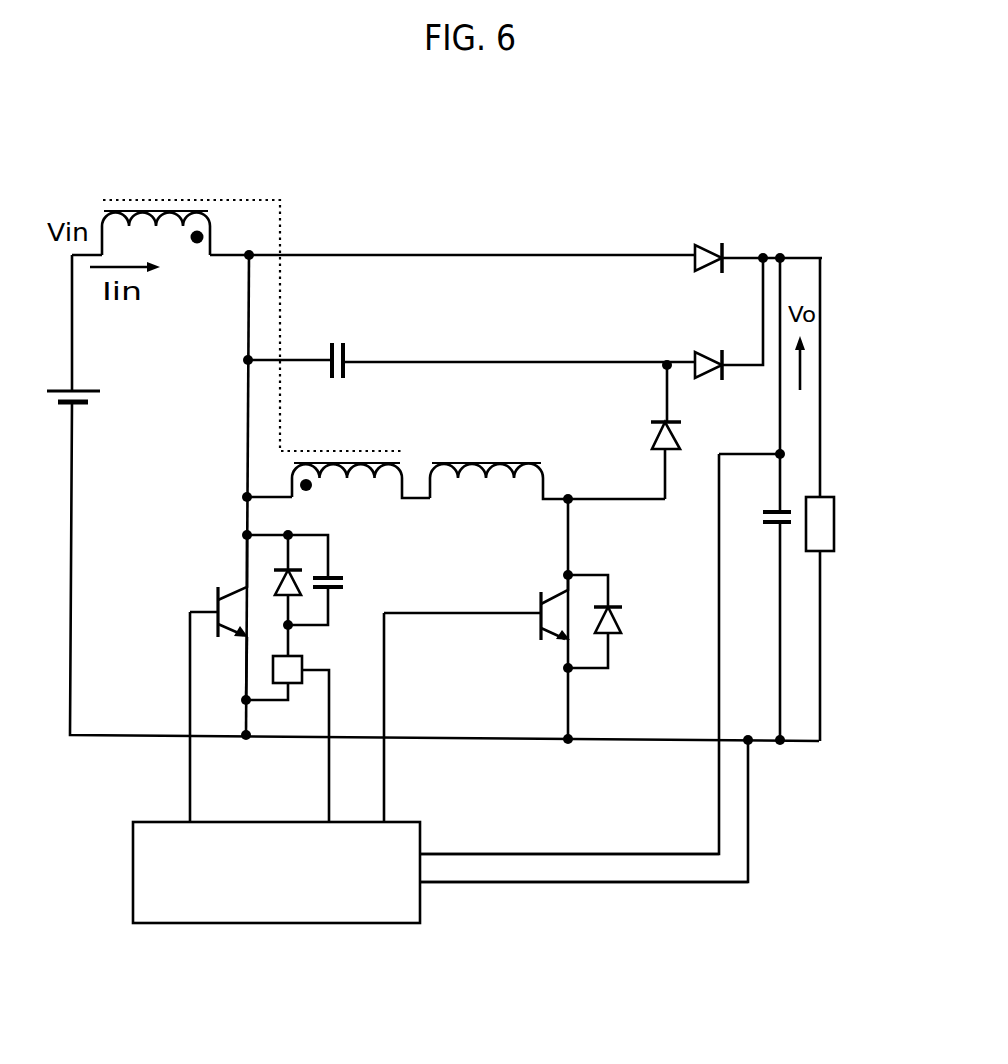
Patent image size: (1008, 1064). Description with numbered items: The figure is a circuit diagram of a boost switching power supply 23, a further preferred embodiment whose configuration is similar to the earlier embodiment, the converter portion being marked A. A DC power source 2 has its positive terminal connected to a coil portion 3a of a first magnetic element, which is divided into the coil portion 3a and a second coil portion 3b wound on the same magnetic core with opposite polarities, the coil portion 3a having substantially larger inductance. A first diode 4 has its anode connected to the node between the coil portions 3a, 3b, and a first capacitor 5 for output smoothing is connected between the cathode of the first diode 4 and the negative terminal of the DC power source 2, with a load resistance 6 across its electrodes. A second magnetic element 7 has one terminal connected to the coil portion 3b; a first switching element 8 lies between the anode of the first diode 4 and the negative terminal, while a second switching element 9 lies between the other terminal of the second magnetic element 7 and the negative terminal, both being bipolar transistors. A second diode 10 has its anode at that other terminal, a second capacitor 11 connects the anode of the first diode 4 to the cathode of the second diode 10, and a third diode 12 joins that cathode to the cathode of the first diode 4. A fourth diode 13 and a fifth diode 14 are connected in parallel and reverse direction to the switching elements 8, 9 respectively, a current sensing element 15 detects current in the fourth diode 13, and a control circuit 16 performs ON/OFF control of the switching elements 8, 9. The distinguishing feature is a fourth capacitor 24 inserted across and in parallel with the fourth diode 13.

The DC power source 2 is at (86, 391).
The coil portion 3a is at (163, 200).
The second coil portion 3b is at (333, 451).
The first diode 4 is at (712, 245).
The first capacitor 5 is at (772, 524).
The load resistance 6 is at (833, 521).
The second magnetic element 7 is at (470, 465).
The first switching element 8 is at (218, 598).
The second switching element 9 is at (541, 603).
The second diode 10 is at (672, 440).
The second capacitor 11 is at (346, 351).
The third diode 12 is at (700, 355).
The fourth diode 13 is at (292, 573).
The fifth diode 14 is at (613, 607).
The current sensing element 15 is at (303, 658).
The control circuit 16 is at (405, 822).
The boost switching power supply 23 is at (573, 900).
The fourth capacitor 24 is at (343, 578).
The converter circuit A is at (349, 250).